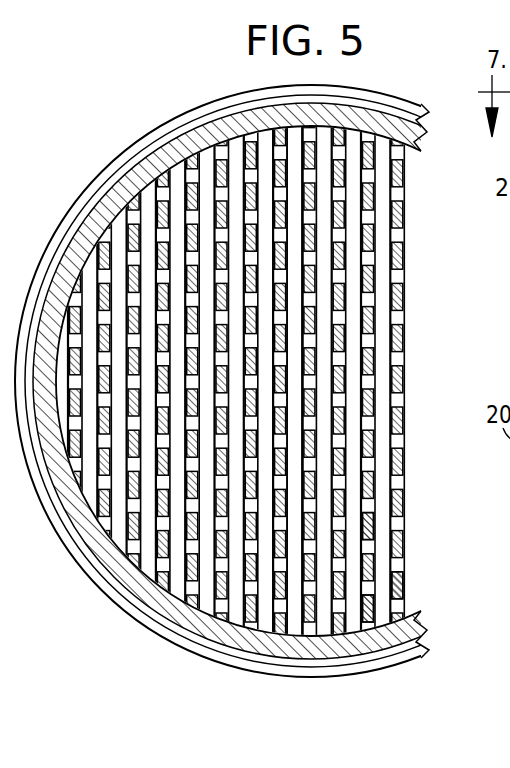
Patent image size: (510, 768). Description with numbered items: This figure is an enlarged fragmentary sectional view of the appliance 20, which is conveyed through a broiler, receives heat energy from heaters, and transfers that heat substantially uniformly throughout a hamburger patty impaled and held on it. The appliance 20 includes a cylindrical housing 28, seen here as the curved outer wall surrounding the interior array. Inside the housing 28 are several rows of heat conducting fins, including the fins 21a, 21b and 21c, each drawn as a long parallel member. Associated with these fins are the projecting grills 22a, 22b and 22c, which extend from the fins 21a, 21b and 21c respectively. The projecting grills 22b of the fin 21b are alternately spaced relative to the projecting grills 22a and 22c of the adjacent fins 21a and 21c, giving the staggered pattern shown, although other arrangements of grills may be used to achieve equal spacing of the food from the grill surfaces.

The appliance 20 is at (104, 146).
The cylindrical housing 28 is at (152, 600).
The fin 21a is at (395, 620).
The fin 21b is at (366, 623).
The fin 21c is at (337, 632).
The projecting grill 22a is at (373, 608).
The projecting grill 22b is at (373, 530).
The projecting grill 22c is at (293, 615).